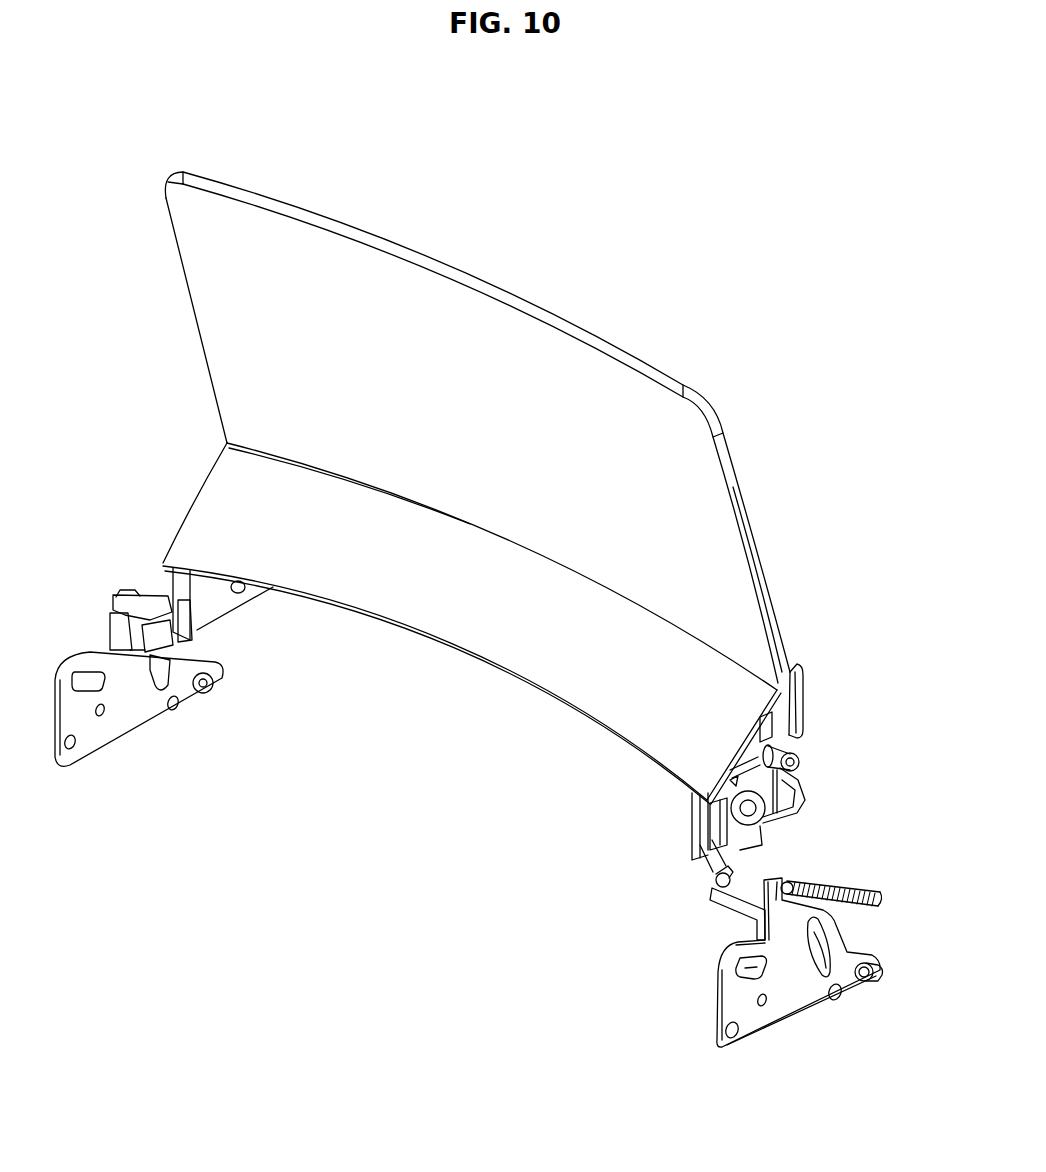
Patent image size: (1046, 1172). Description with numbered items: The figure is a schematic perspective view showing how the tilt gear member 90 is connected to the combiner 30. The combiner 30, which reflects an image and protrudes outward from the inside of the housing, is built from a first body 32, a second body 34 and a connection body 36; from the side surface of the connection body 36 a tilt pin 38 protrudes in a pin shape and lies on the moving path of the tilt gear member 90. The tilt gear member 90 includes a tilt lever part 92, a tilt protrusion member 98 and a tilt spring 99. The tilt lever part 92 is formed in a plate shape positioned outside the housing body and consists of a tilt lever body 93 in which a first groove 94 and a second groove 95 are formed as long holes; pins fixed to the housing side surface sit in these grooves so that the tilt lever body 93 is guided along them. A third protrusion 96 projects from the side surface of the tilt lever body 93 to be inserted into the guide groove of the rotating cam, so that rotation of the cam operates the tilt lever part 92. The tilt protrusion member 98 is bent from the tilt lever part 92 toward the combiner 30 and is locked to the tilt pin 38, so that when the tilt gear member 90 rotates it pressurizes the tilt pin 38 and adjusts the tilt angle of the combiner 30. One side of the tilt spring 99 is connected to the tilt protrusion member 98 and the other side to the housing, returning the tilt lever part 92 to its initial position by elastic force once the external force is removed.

The combiner 30 is at (461, 541).
The first body 32 is at (625, 422).
The second body 34 is at (527, 637).
The connection body 36 is at (700, 823).
The tilt pin 38 is at (717, 888).
The tilt gear member 90 is at (797, 986).
The tilt lever part 92 is at (782, 1023).
The tilt lever body 93 is at (753, 1023).
The first groove 94 is at (745, 971).
The second groove 95 is at (817, 947).
The third protrusion 96 is at (884, 977).
The tilt protrusion member 98 is at (730, 868).
The tilt spring 99 is at (865, 887).